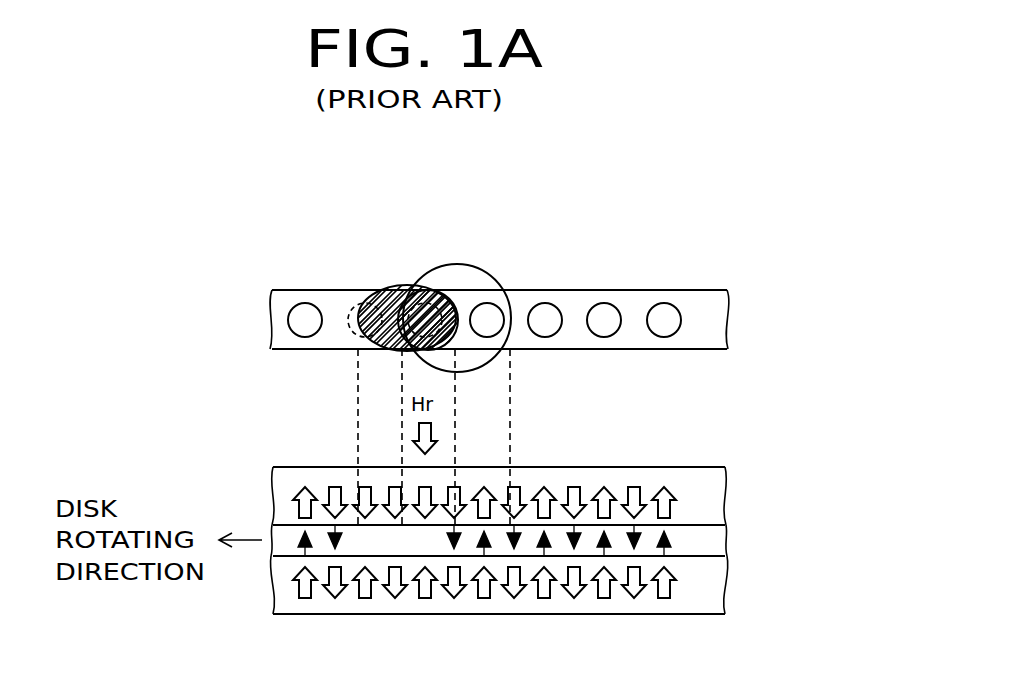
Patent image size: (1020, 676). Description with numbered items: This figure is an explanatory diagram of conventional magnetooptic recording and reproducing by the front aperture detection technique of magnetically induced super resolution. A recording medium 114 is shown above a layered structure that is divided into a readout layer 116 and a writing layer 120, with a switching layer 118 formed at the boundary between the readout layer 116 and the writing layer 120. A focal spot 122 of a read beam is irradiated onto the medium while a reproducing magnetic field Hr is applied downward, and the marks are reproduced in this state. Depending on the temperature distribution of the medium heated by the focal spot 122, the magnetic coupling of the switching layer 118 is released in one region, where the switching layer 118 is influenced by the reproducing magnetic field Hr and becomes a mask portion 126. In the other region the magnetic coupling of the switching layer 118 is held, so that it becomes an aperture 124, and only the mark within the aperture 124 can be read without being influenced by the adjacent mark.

The recording medium 114 is at (703, 323).
The readout layer 116 is at (708, 492).
The switching layer 118 is at (705, 543).
The writing layer 120 is at (708, 600).
The focal spot 122 is at (467, 265).
The aperture 124 is at (467, 303).
The mask portion 126 is at (424, 288).